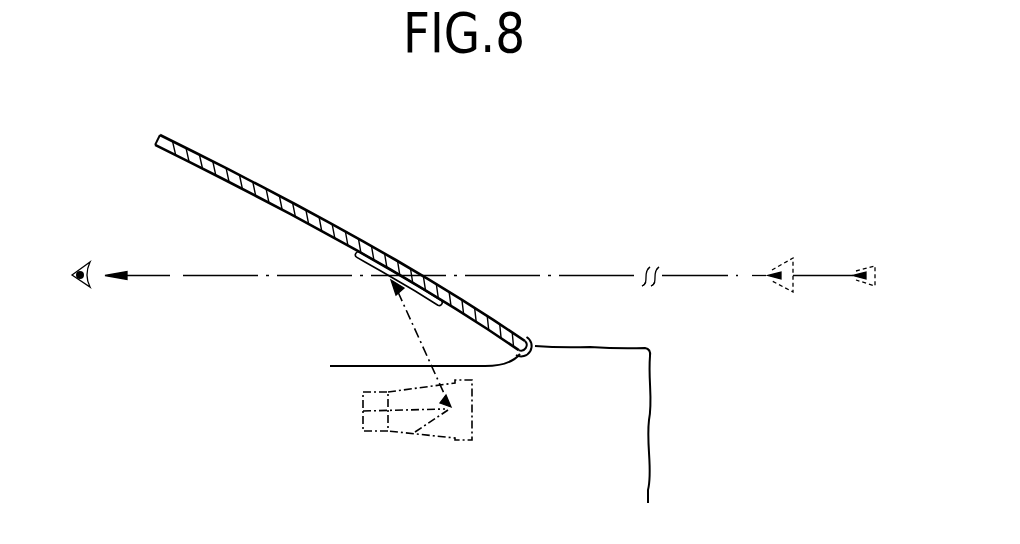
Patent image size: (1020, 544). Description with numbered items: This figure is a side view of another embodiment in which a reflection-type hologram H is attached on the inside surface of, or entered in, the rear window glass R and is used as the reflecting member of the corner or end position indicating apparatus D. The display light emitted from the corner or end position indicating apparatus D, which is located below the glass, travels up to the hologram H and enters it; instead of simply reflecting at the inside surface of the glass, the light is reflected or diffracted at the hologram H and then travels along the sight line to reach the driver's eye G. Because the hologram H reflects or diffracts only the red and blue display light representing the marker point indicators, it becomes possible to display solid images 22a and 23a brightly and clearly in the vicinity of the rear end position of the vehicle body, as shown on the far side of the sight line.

The rear window glass R is at (285, 198).
The reflection-type hologram H is at (364, 258).
The driver's eye G is at (387, 274).
The corner or end position indicating apparatus D is at (472, 410).
The solid image 22a is at (777, 256).
The virtual image / light source position 23a is at (867, 262).